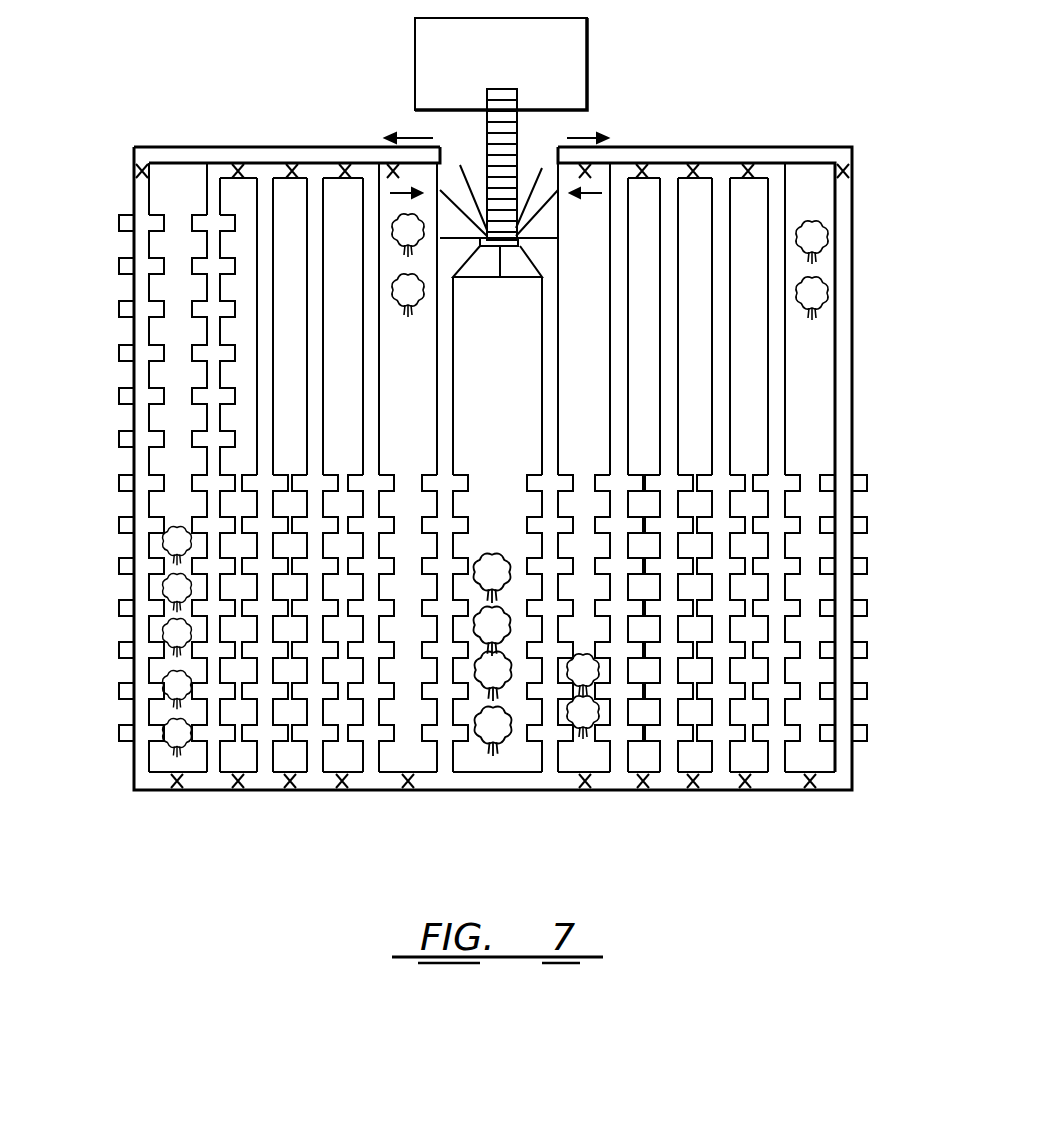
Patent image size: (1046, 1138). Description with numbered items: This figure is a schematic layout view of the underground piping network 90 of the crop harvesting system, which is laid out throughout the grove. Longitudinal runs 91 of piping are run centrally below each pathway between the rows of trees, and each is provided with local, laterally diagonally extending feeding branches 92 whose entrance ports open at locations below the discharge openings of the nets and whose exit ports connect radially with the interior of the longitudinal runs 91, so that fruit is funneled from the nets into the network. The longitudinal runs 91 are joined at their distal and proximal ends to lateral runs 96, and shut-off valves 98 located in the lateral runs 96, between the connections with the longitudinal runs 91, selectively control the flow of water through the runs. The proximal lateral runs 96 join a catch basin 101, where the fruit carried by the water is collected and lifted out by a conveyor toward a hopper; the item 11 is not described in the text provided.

The underground piping network 90 is at (116, 284).
The longitudinal runs 91 is at (263, 415).
The feeding branches 92 is at (383, 475).
The lateral runs 96 is at (305, 173).
The shut-off valves 98 is at (390, 790).
The catch basin 101 is at (538, 229).
The plants 11 is at (177, 738).